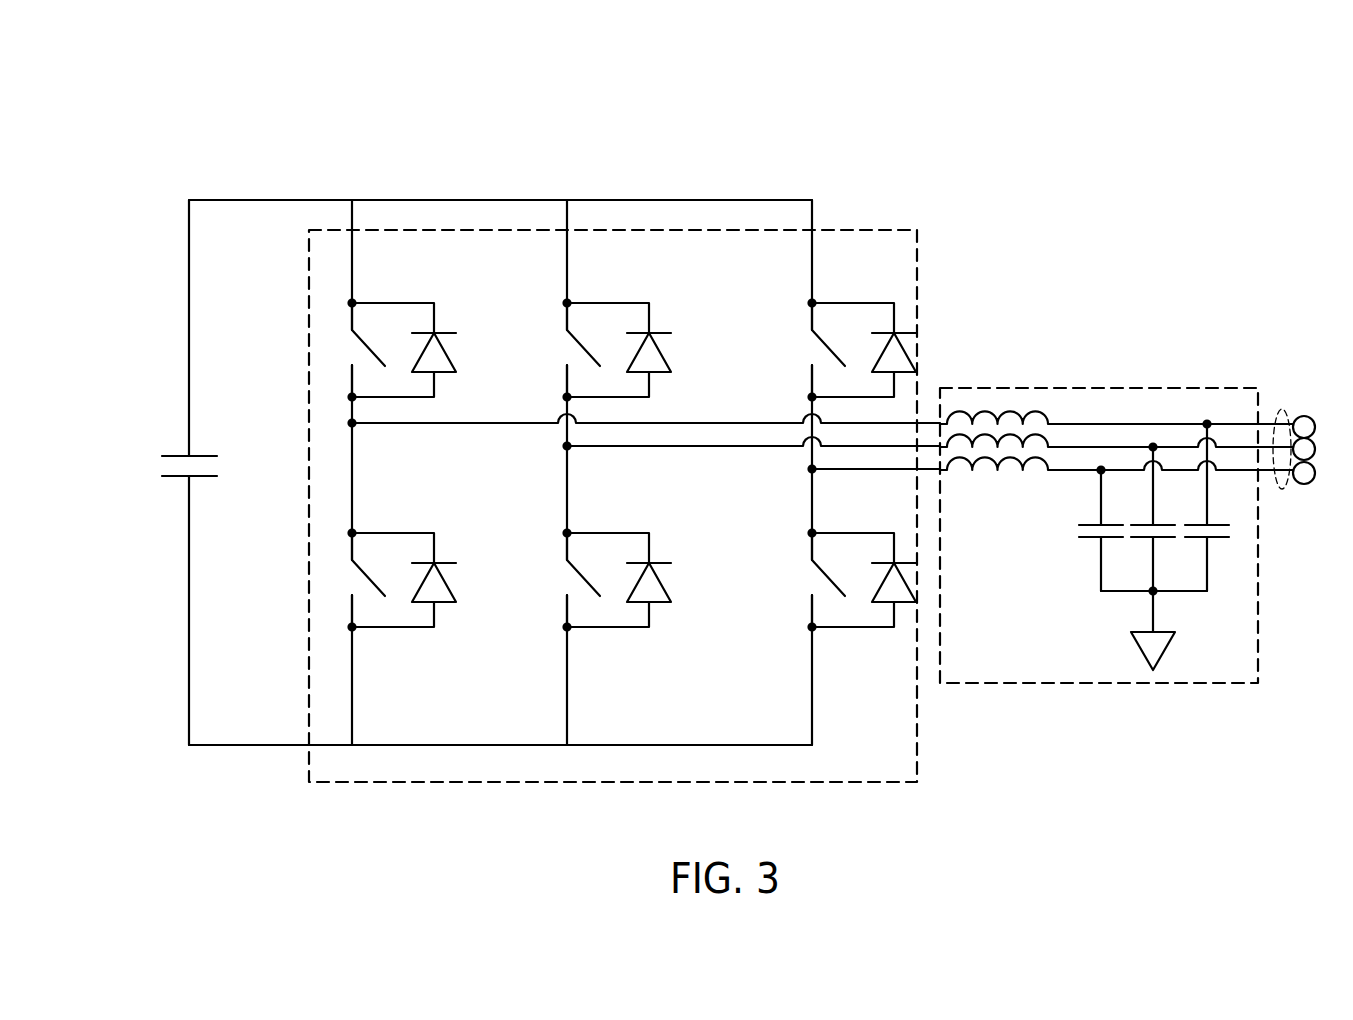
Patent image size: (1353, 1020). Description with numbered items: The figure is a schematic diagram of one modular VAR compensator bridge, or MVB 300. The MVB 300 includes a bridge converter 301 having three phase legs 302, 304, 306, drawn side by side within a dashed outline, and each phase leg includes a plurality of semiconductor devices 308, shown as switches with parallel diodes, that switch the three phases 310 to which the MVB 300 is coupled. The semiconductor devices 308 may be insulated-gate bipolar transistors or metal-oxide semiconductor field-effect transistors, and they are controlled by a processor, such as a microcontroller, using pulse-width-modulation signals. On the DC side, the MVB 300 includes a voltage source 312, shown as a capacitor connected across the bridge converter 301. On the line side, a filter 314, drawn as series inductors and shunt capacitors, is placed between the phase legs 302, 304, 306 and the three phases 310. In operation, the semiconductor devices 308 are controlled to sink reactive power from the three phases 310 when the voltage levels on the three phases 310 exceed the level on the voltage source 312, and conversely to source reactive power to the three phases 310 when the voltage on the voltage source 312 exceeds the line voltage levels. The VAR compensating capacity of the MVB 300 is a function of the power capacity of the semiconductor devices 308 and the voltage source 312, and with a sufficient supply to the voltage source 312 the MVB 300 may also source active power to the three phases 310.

The MVB 300 is at (968, 82).
The bridge converter 301 is at (410, 790).
The phase leg 302 is at (352, 180).
The phase leg 304 is at (567, 180).
The phase leg 306 is at (812, 180).
The semiconductor devices 308 is at (336, 308).
The three phases 310 is at (1282, 408).
The voltage source 312 is at (172, 510).
The filter 314 is at (1097, 388).